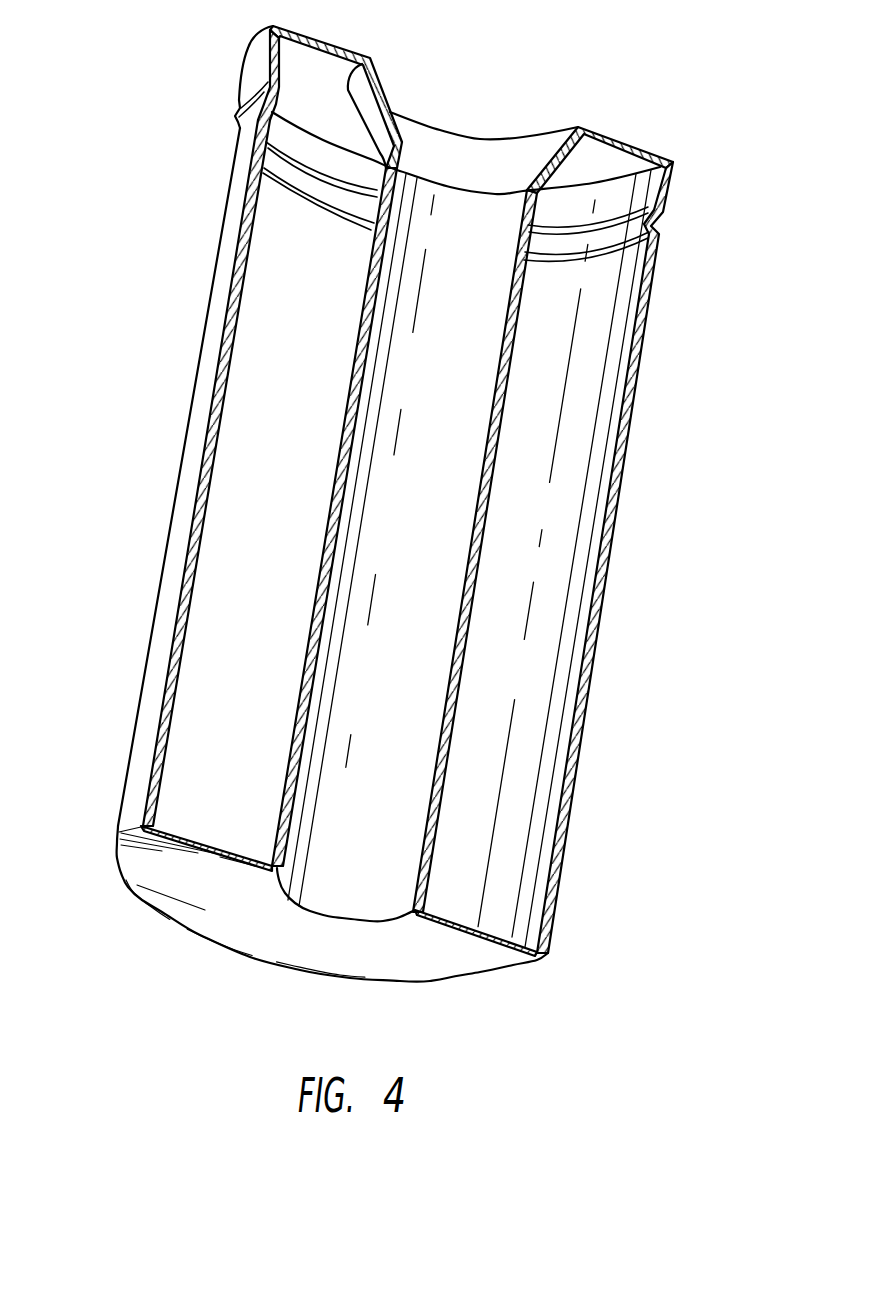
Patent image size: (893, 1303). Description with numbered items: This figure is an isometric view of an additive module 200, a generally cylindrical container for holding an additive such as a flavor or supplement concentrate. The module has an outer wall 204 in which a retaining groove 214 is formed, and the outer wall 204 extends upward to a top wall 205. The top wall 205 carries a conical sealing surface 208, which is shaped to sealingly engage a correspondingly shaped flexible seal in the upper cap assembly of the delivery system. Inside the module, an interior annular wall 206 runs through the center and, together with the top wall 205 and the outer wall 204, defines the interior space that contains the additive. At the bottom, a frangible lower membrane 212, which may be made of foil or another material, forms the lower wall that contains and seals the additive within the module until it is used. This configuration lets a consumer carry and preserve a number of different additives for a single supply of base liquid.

The additive module 200 is at (131, 434).
The outer wall 204 is at (613, 535).
The top wall 205 is at (623, 142).
The interior annular wall 206 is at (467, 608).
The conical sealing surface 208 is at (472, 153).
The frangible lower membrane 212 is at (460, 963).
The retaining groove 214 is at (654, 221).